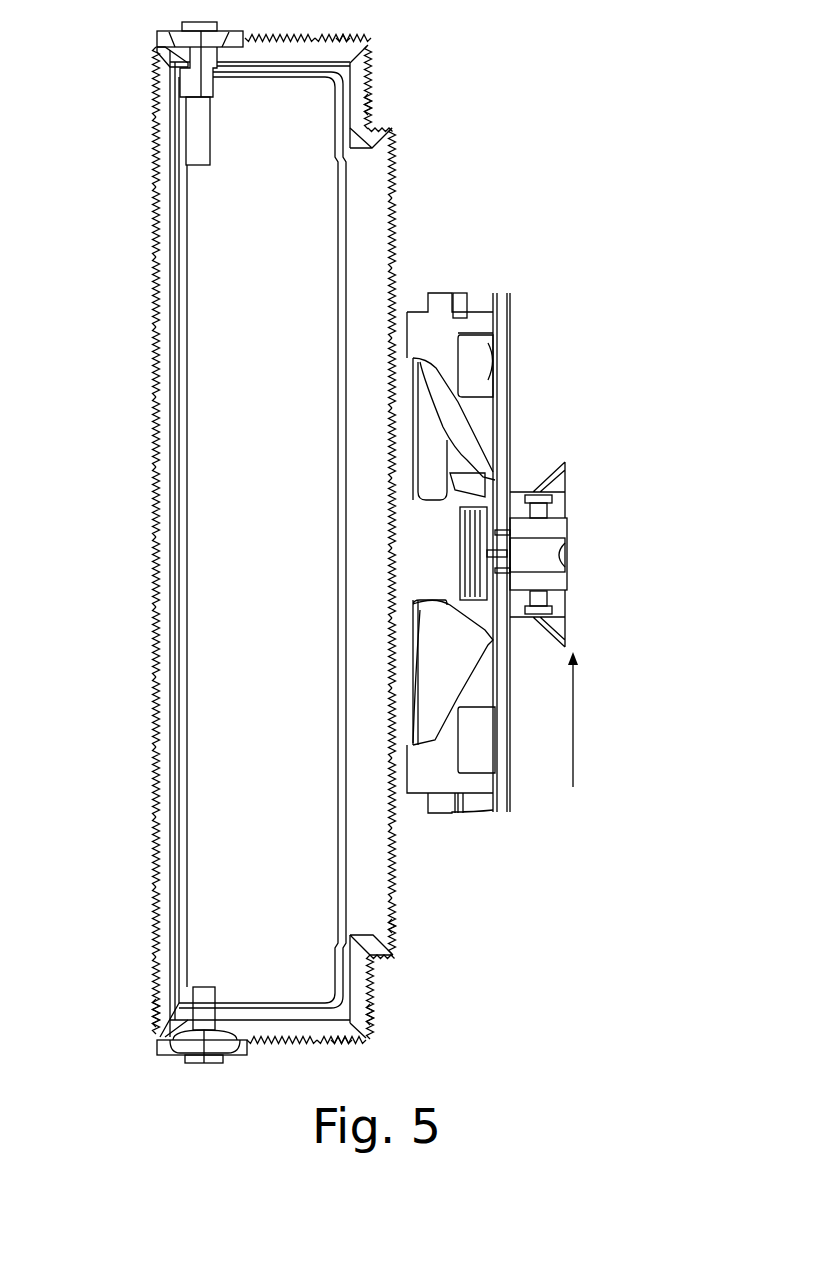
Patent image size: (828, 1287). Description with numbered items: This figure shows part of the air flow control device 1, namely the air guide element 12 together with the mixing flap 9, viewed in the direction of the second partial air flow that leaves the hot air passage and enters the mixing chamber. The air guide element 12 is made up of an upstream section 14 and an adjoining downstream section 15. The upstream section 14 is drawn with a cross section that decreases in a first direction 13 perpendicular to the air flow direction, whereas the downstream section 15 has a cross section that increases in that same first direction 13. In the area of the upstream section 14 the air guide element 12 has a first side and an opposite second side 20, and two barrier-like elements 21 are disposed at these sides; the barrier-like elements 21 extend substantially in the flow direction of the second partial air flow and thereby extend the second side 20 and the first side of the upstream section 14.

The mixing flap 9 is at (157, 475).
The air flow control device 1 is at (415, 310).
The air guide element 12 is at (465, 284).
The upstream section 14 is at (450, 330).
The barrier-like elements 21 is at (432, 473).
The downstream section 15 is at (565, 482).
The first direction 13 is at (580, 720).
The second side 20 is at (433, 757).